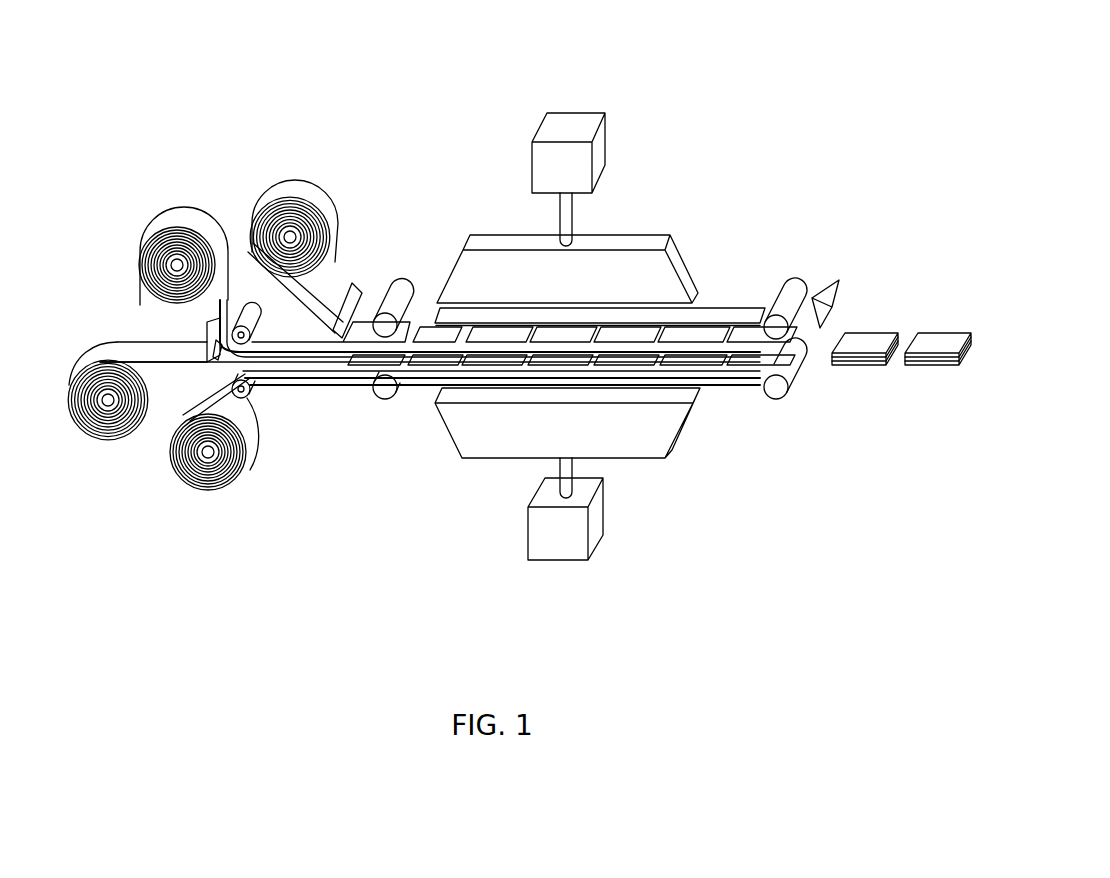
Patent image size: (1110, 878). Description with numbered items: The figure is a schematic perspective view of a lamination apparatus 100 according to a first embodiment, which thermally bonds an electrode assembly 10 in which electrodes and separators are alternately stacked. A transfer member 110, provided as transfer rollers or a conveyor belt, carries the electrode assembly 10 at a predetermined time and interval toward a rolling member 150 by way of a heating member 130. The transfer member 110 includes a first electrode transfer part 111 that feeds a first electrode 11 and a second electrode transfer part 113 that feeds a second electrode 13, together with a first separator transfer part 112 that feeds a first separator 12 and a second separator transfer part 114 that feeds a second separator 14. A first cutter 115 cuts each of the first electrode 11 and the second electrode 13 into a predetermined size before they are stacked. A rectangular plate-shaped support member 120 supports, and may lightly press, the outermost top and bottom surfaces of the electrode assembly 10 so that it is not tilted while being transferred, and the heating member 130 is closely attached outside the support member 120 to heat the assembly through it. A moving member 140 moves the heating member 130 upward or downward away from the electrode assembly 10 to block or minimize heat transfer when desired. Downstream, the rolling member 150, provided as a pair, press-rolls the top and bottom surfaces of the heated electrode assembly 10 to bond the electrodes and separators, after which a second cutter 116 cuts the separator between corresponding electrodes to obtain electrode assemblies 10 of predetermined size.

The electrode assembly manufacturing apparatus 100 is at (855, 66).
The electrode assembly 10 is at (935, 362).
The first electrode 11 is at (313, 312).
The first separator 12 is at (285, 355).
The second electrode 13 is at (163, 367).
The second separator 14 is at (350, 378).
The transfer member 110 is at (405, 262).
The first electrode transfer part 111 is at (290, 231).
The first separator transfer part 112 is at (177, 259).
The second electrode transfer part 113 is at (108, 394).
The second separator transfer part 114 is at (208, 446).
The first cutter 115 is at (356, 290).
The second cutter 116 is at (830, 290).
The support member 120 is at (736, 310).
The heating member 130 is at (647, 235).
The moving member 140 is at (600, 148).
The rolling member 150 is at (790, 290).